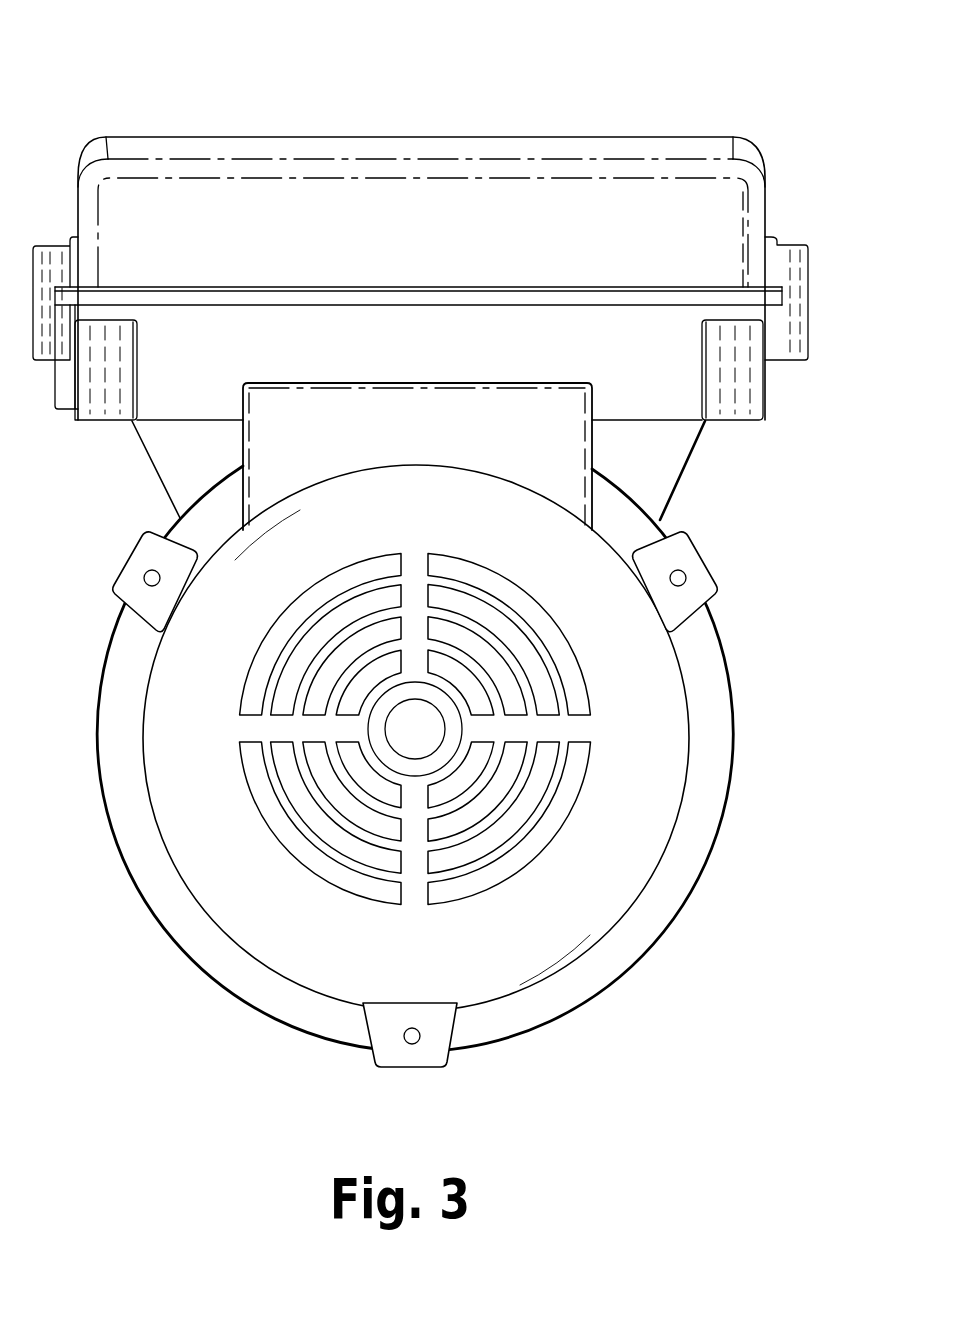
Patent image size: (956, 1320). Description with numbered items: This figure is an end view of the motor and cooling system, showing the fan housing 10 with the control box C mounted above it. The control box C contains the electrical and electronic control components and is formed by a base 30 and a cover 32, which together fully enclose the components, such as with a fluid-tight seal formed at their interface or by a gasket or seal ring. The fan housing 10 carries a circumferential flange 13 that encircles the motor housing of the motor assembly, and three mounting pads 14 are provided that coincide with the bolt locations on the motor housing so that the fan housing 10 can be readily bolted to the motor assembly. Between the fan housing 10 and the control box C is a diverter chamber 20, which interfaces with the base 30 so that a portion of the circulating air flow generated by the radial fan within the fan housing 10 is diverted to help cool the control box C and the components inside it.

The control box C is at (397, 137).
The cover 32 is at (765, 190).
The base 30 is at (747, 421).
The diverter chamber 20 is at (270, 440).
The mounting pads 14 is at (123, 567).
The circumferential flange 13 is at (665, 872).
The fan housing 10 is at (627, 965).